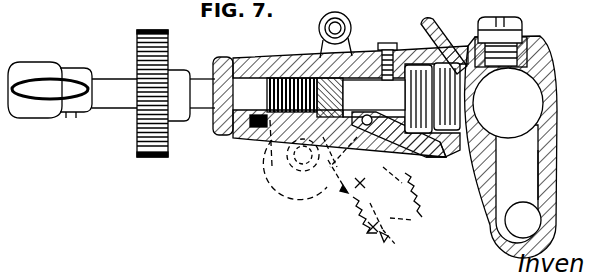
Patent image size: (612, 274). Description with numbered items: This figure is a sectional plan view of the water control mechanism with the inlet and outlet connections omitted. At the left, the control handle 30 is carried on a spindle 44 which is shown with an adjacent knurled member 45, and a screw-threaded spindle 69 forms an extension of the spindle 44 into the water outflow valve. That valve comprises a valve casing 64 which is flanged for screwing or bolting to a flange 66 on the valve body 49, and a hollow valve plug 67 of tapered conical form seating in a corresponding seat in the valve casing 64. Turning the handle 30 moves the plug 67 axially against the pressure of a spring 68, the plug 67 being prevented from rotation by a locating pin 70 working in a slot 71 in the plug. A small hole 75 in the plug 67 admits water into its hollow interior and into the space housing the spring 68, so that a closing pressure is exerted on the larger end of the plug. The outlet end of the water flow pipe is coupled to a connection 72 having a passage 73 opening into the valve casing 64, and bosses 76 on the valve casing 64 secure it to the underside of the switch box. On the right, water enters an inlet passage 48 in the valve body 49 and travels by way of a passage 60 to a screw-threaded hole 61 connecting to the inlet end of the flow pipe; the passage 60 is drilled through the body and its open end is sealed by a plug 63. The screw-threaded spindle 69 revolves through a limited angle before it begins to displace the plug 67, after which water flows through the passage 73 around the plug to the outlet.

The control handle 30 is at (53, 97).
The spindle 44 is at (120, 104).
The knurled knob 45 is at (150, 157).
The inlet passage 48 is at (525, 88).
The valve body 49 is at (555, 128).
The passage 60 is at (528, 175).
The screw-threaded hole 61 is at (500, 228).
The plug 63 is at (521, 30).
The valve casing 64 is at (270, 134).
The flange 66 is at (437, 23).
The hollow valve plug 67 is at (328, 80).
The spring 68 is at (453, 150).
The screw-threaded spindle 69 is at (278, 78).
The locating pin 70 is at (390, 52).
The slot 71 is at (364, 80).
The connection 72 is at (364, 237).
The passage 73 is at (363, 207).
The small hole 75 is at (368, 133).
The bosses 76 is at (320, 30).